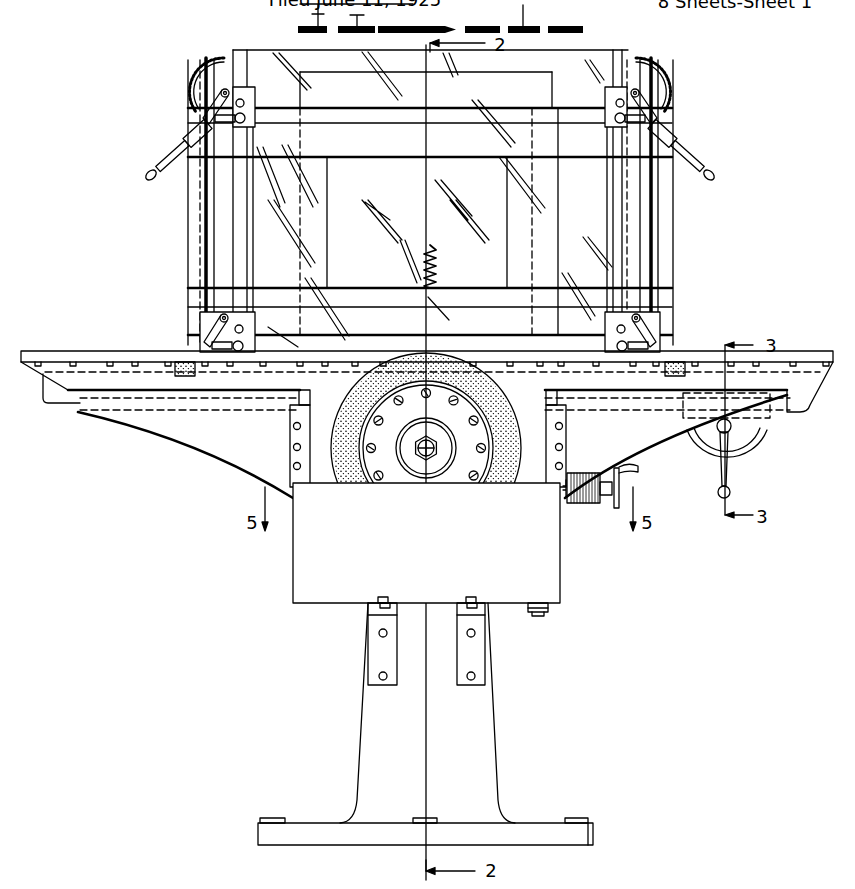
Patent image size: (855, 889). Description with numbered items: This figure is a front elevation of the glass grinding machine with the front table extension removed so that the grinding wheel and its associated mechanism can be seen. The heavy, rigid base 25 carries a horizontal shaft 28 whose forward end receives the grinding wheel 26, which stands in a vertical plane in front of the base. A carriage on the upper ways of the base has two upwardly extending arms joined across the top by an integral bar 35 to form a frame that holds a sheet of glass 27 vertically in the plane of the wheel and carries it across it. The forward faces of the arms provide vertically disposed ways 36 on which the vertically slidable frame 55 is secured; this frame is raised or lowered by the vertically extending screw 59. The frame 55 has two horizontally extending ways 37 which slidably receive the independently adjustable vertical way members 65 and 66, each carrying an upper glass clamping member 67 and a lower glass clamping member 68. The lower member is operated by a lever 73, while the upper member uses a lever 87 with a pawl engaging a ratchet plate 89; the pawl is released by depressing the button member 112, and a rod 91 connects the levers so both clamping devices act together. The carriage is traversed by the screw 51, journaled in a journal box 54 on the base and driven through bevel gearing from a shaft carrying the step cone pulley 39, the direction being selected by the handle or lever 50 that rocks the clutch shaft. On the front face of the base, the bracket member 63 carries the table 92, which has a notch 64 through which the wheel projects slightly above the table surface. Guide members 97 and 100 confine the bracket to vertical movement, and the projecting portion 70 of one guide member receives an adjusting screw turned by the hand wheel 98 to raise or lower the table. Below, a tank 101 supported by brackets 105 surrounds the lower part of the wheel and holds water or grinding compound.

The base 25 is at (492, 768).
The grinding wheel 26 is at (530, 486).
The sheet of glass 27 is at (626, 58).
The horizontal shaft 28 is at (418, 452).
The integral bar 35 is at (352, 53).
The vertically disposed ways 36 is at (305, 70).
The horizontally extending ways 37 is at (372, 120).
The step cone pulley 39 is at (766, 432).
The handle or lever 50 is at (730, 476).
The screw 51 is at (196, 412).
The journal box 54 is at (88, 418).
The vertically slidable frame 55 is at (188, 232).
The vertically extending screw 59 is at (439, 262).
The bracket member 63 is at (68, 382).
The notch 64 is at (465, 357).
The vertical way member 65 is at (250, 252).
The vertical way member 66 is at (616, 212).
The upper glass guiding or clamping member 67 is at (222, 78).
The lower glass guiding or clamping member 68 is at (200, 328).
The projecting portion 70 is at (585, 472).
The lever 73 is at (207, 322).
The lever 87 is at (178, 152).
The ratchet plate 89 is at (192, 99).
The rod 91 is at (204, 280).
The table 92 is at (30, 352).
The guide member 97 is at (568, 504).
The hand wheel 98 is at (620, 490).
The guide member 100 is at (292, 465).
The tank 101 is at (426, 549).
The brackets 105 is at (370, 650).
The button member 112 is at (146, 178).